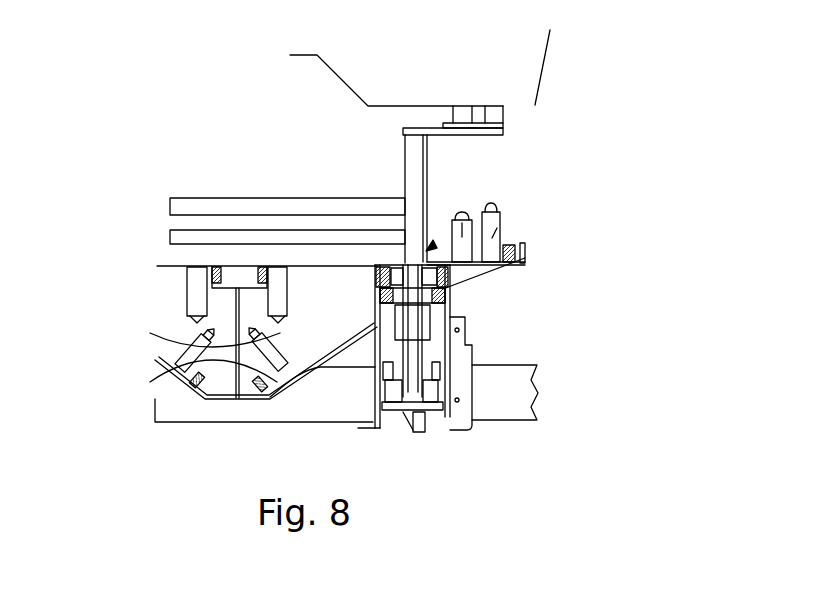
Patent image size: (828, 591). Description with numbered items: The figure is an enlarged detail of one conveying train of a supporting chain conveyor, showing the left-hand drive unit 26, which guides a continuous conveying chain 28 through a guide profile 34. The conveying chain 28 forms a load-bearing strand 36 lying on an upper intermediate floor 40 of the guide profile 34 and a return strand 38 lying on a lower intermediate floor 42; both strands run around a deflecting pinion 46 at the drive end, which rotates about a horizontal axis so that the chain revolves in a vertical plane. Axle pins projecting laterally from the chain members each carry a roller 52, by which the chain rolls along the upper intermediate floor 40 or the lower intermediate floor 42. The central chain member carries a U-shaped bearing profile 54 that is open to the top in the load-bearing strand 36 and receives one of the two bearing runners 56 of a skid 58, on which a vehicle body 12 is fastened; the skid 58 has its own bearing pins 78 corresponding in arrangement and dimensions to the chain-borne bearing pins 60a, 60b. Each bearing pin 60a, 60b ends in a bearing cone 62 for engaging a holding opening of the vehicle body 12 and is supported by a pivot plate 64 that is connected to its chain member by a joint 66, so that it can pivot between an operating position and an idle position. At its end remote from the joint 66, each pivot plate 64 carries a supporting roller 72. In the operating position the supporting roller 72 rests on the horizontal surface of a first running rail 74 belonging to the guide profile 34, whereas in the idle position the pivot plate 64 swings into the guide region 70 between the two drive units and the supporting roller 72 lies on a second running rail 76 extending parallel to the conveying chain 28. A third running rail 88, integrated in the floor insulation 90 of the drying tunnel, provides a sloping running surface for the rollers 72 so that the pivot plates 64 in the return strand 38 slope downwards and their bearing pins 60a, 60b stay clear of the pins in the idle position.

The vehicle body 12 is at (530, 46).
The bearing pin 78 is at (462, 117).
The skid 58 is at (432, 153).
The bearing runner 56 is at (407, 197).
The guide region 70 is at (183, 255).
The second running rail 76 is at (187, 267).
The pivot plate 64 is at (258, 273).
The supporting roller 72 is at (233, 272).
The bearing cone 62 is at (198, 322).
The bearing pin 60a is at (500, 210).
The bearing pin 60b is at (492, 238).
The third running rail 88 is at (223, 398).
The floor insulation 90 is at (160, 412).
The joint 66 is at (377, 262).
The roller 52 is at (378, 265).
The conveying chain 28 is at (395, 255).
The upper intermediate floor 40 is at (375, 298).
The deflecting pinion 46 is at (420, 348).
The guide profile 34 is at (462, 300).
The first running rail 74 is at (500, 273).
The load-bearing strand 36 is at (462, 237).
The bearing profile 54 is at (431, 245).
The return strand 38 is at (447, 390).
The lower intermediate floor 42 is at (423, 411).
The drive unit 26 is at (385, 438).